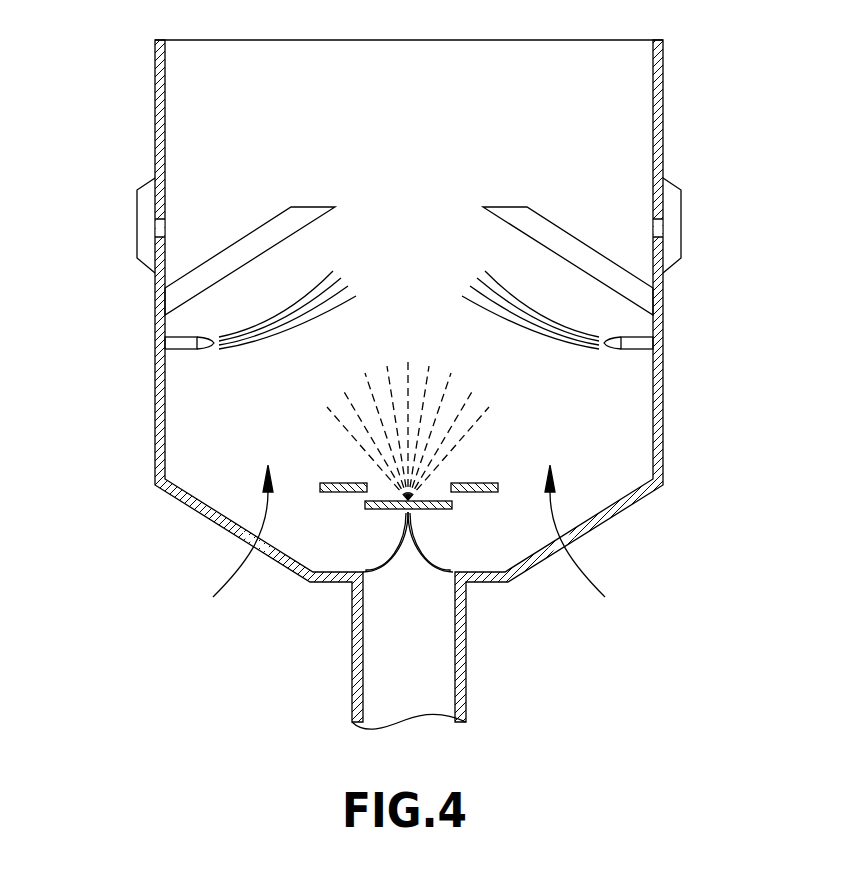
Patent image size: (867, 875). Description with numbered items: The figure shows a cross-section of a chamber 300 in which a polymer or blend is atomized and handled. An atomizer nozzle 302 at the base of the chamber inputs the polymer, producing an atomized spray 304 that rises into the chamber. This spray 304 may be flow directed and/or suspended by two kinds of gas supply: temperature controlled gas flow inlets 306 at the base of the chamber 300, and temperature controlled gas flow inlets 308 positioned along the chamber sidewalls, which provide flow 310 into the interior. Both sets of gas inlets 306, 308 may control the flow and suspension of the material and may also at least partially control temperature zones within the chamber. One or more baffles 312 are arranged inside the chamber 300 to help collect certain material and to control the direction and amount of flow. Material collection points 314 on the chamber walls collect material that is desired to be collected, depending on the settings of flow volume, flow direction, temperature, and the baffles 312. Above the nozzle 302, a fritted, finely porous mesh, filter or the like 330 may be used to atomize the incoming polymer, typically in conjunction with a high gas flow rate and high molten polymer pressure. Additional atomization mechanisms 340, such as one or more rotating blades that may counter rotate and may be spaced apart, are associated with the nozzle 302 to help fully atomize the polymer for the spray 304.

The chamber 300 is at (155, 78).
The atomizer nozzle 302 is at (418, 534).
The atomized spray 304 is at (408, 382).
The temperature controlled gas flow inlets 306 is at (268, 510).
The temperature controlled gas flow inlets 308 is at (184, 351).
The flow 310 is at (325, 276).
The baffles 312 is at (257, 229).
The material collection points 314 is at (137, 233).
The fritted mesh 330 is at (370, 510).
The atomization mechanisms 340 is at (320, 483).